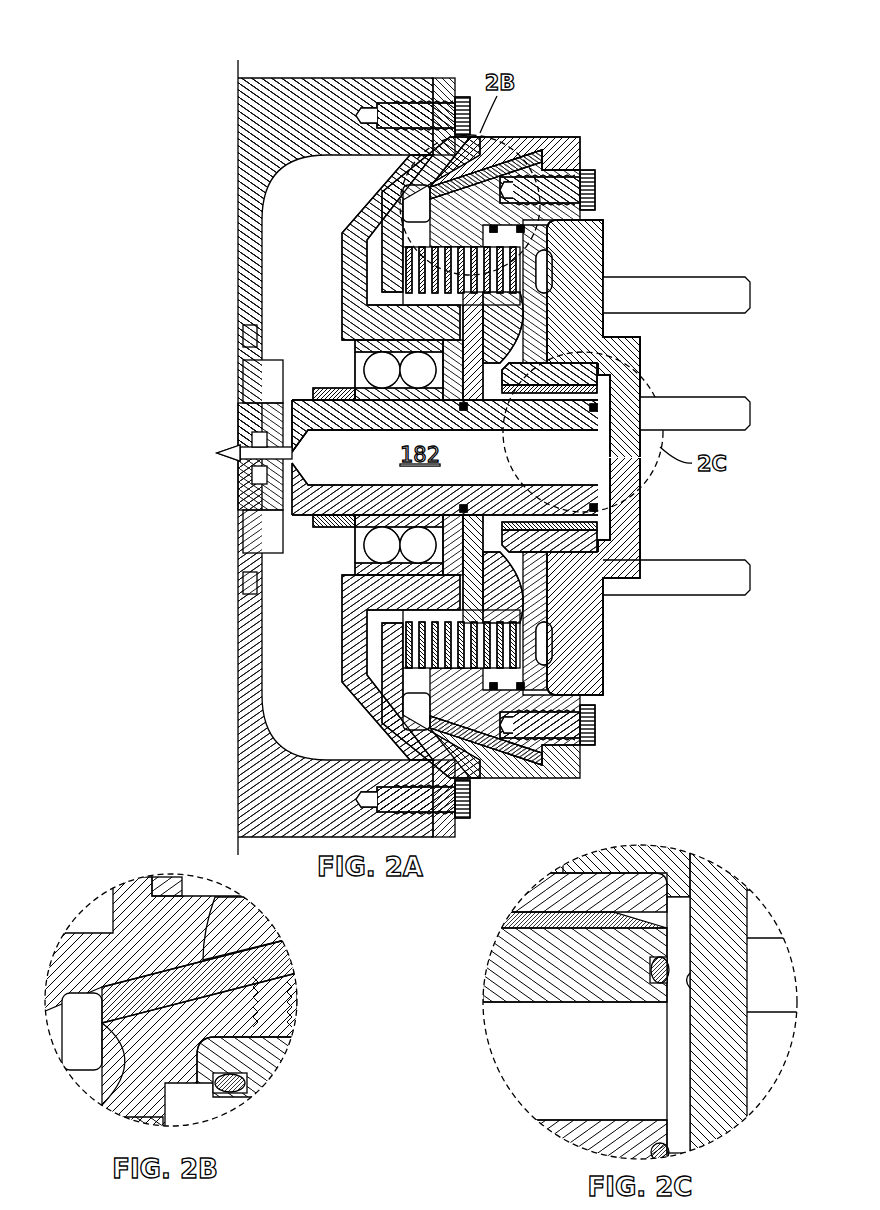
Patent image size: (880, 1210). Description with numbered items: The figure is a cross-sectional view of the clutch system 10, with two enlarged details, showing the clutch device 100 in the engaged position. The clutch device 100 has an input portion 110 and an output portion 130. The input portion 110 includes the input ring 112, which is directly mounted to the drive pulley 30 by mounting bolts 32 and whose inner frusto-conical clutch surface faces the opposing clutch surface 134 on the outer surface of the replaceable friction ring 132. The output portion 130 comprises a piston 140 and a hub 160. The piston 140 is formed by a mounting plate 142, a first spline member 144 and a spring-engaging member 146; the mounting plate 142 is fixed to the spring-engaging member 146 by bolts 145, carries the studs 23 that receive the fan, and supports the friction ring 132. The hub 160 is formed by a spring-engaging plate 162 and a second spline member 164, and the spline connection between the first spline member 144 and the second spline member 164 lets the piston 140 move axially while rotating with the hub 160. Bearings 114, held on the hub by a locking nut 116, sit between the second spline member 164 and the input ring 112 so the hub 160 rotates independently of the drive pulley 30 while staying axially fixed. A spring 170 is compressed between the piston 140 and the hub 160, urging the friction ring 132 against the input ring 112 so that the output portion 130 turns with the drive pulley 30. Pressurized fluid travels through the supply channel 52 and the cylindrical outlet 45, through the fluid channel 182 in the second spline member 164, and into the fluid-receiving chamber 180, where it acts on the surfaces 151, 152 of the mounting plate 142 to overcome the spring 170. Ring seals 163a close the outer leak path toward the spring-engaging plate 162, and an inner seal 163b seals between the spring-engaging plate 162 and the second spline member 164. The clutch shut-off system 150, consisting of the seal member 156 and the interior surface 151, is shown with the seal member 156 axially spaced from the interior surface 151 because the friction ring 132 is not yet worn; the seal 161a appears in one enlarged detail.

In FIG. 2A, the clutch system 10 is at (133, 82).
In FIG. 2A, the drive pulley 30 is at (265, 100).
In FIG. 2A, the mounting bolts 32 is at (462, 97).
In FIG. 2A, the clutch device 100 is at (695, 105).
In FIG. 2A, the input portion 110 is at (345, 222).
In FIG. 2A, the input ring 112 is at (528, 137).
In FIG. 2B, the input ring 112 is at (140, 907).
In FIG. 2A, the bearing 114 is at (380, 545).
In FIG. 2B, the bearing 114 is at (90, 1085).
In FIG. 2A, the locking nut 116 is at (250, 540).
In FIG. 2A, the output portion 130 is at (707, 197).
In FIG. 2A, the friction ring 132 is at (533, 158).
In FIG. 2B, the friction ring 132 is at (272, 958).
In FIG. 2B, the clutch surface 134 is at (258, 909).
In FIG. 2A, the piston 140 is at (710, 333).
In FIG. 2A, the mounting plate 142 is at (620, 367).
In FIG. 2B, the mounting plate 142 is at (258, 1065).
In FIG. 2C, the mounting plate 142 is at (584, 892).
In FIG. 2A, the first spline member 144 is at (606, 388).
In FIG. 2C, the first spline member 144 is at (584, 920).
In FIG. 2A, the bolts 145 is at (592, 188).
In FIG. 2A, the spring-engaging member 146 is at (500, 285).
In FIG. 2B, the spring-engaging member 146 is at (95, 1110).
In FIG. 2A, the clutch shut-off system 150 is at (808, 372).
In FIG. 2C, the clutch shut-off system 150 is at (818, 877).
In FIG. 2A, the interior surface 151 is at (606, 440).
In FIG. 2C, the interior surface 151 is at (689, 982).
In FIG. 2A, the surface 152 is at (545, 277).
In FIG. 2A, the seal member 156 is at (598, 408).
In FIG. 2C, the seal member 156 is at (665, 970).
In FIG. 2A, the hub 160 is at (710, 505).
In FIG. 2B, the seal 161a is at (230, 1092).
In FIG. 2A, the spring-engaging plate 162 is at (552, 580).
In FIG. 2A, the ring seals 163a is at (523, 225).
In FIG. 2A, the inner seal 163b is at (460, 512).
In FIG. 2A, the second spline member 164 is at (580, 495).
In FIG. 2A, the spring 170 is at (523, 240).
In FIG. 2A, the fluid-receiving chamber 180 is at (548, 282).
In FIG. 2C, the fluid-receiving chamber 180 is at (683, 1055).
In FIG. 2A, the fluid channel 182 is at (445, 426).
In FIG. 2C, the fluid channel 182 is at (575, 1061).
In FIG. 2A, the studs 23 is at (724, 283).
In FIG. 2A, the cylindrical outlet 45 is at (237, 447).
In FIG. 2A, the supply channel 52 is at (237, 460).